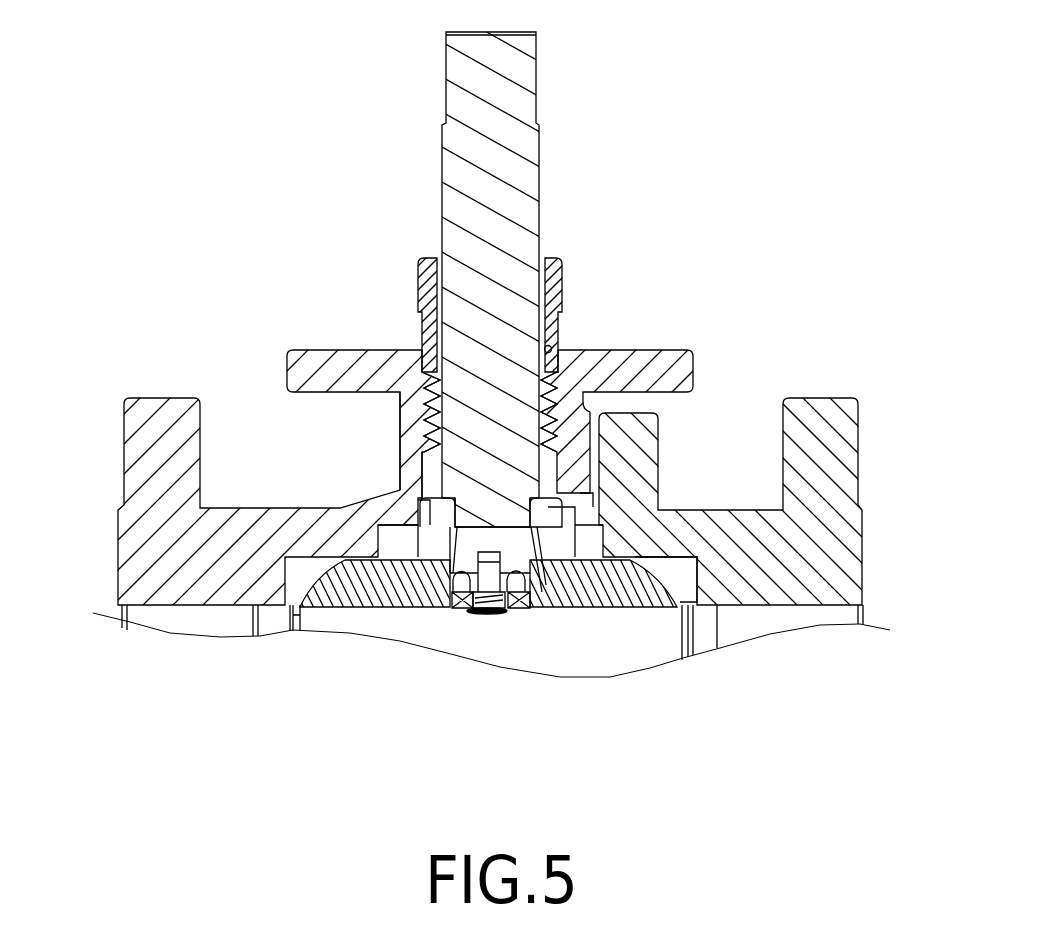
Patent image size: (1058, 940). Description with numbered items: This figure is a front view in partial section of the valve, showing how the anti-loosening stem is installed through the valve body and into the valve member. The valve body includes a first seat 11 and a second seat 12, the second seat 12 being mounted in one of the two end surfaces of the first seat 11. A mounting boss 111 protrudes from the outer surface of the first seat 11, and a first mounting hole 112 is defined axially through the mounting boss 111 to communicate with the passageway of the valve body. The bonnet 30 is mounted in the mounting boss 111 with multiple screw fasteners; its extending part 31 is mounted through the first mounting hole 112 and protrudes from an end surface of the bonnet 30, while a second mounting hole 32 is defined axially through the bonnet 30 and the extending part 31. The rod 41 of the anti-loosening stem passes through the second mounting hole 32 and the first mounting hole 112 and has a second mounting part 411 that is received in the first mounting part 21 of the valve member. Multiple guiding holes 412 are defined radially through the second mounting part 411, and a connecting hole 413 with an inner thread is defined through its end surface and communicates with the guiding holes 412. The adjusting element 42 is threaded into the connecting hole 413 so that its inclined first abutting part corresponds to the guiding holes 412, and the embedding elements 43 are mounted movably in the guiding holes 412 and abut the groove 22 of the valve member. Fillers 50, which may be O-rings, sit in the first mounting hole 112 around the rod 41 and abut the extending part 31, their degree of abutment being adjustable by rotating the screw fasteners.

The first seat 11 is at (150, 524).
The second seat 12 is at (845, 550).
The mounting boss 111 is at (415, 398).
The first mounting hole 112 is at (555, 350).
The first mounting part 21 is at (432, 578).
The groove 22 is at (445, 590).
The bonnet 30 is at (428, 291).
The extending part 31 is at (426, 350).
The second mounting hole 32 is at (541, 357).
The rod 41 is at (512, 203).
The second mounting part 411 is at (505, 518).
The guiding holes 412 is at (520, 608).
The connecting hole 413 is at (515, 610).
The adjusting element 42 is at (490, 612).
The embedding elements 43 is at (470, 605).
The fillers 50 is at (550, 348).